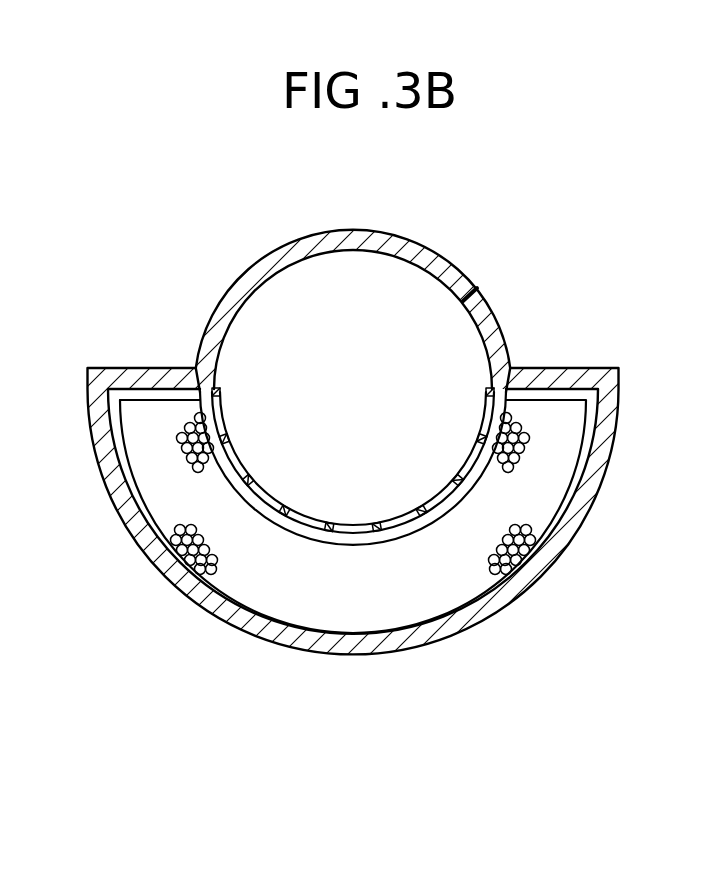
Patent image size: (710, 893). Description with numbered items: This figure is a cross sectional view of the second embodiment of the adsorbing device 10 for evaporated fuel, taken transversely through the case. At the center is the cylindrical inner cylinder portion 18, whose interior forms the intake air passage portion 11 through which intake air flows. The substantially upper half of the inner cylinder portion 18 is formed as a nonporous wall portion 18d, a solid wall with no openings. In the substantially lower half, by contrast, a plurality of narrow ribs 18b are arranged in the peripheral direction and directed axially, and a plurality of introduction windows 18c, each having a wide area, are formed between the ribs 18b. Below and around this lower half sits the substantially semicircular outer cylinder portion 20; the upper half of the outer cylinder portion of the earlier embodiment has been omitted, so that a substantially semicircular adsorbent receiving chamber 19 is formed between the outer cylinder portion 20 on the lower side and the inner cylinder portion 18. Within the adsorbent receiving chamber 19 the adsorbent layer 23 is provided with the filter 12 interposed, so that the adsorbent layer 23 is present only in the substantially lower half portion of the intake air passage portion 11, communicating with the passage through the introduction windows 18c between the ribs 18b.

The adsorbing device 10 is at (170, 258).
The intake air passage portion 11 is at (375, 353).
The filter 12 is at (343, 540).
The inner cylinder portion 18 is at (277, 247).
The ribs 18b is at (327, 528).
The introduction windows 18c is at (213, 415).
The nonporous wall portion 18d is at (472, 288).
The adsorbent receiving chamber 19 is at (157, 475).
The outer cylinder portion 20 is at (598, 455).
The adsorbent layer 23 is at (218, 545).